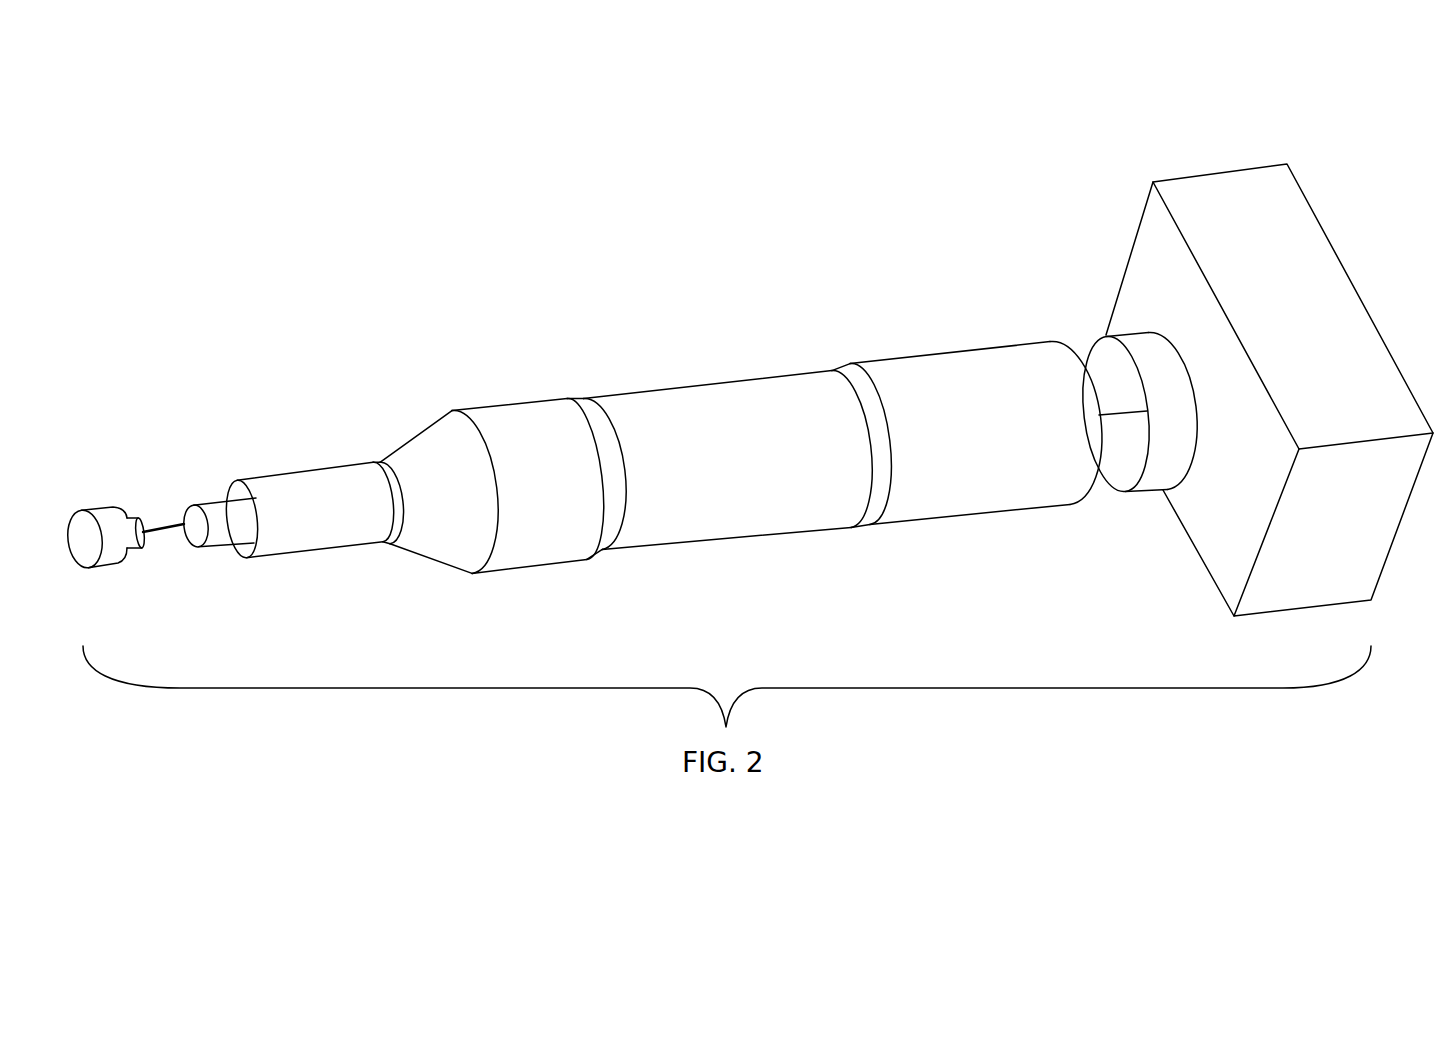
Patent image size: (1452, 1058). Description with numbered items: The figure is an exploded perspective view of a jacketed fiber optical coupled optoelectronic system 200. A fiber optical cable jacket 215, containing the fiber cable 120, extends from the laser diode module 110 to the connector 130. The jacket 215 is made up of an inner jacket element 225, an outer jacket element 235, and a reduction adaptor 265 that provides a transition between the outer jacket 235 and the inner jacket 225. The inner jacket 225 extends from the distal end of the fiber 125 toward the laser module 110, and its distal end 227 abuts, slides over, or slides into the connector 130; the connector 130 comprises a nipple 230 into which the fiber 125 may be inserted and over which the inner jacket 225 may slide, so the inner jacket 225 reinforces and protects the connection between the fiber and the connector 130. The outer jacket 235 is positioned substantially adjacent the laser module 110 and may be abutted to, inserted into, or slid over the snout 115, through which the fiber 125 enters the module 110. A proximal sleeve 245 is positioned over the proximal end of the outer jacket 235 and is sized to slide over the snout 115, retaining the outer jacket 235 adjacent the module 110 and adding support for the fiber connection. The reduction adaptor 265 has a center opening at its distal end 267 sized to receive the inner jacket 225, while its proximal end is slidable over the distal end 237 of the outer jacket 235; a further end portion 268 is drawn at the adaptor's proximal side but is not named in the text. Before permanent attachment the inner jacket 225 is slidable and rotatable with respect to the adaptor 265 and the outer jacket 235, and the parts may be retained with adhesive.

The jacketed fiber optical coupled optoelectronic system 200 is at (318, 148).
The laser diode module 110 is at (1232, 185).
The snout 115 is at (1140, 347).
The fiber cable 120 is at (227, 538).
The fiber 125 is at (160, 533).
The connector 130 is at (108, 566).
The fiber optical cable jacket 215 is at (850, 341).
The inner jacket element 225 is at (323, 550).
The distal end of inner jacket 227 is at (240, 481).
The nipple 230 is at (132, 515).
The outer jacket element 235 is at (747, 538).
The distal end of outer jacket 237 is at (624, 522).
The proximal sleeve 245 is at (970, 515).
The reduction adaptor 265 is at (513, 570).
The distal end of reduction adaptor 267 is at (395, 527).
The collimator end flange 268 is at (603, 536).